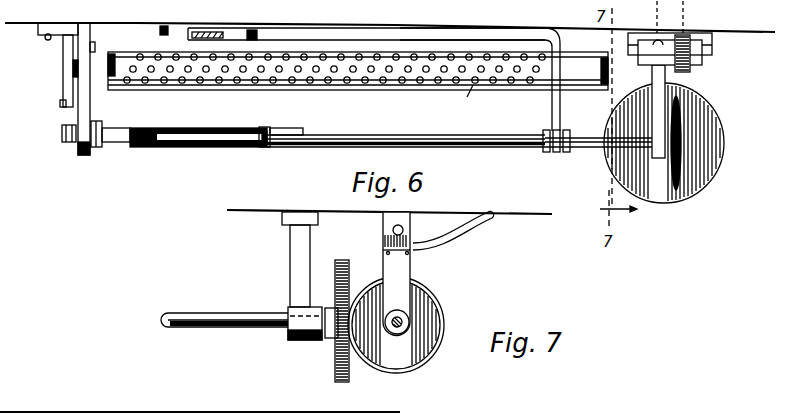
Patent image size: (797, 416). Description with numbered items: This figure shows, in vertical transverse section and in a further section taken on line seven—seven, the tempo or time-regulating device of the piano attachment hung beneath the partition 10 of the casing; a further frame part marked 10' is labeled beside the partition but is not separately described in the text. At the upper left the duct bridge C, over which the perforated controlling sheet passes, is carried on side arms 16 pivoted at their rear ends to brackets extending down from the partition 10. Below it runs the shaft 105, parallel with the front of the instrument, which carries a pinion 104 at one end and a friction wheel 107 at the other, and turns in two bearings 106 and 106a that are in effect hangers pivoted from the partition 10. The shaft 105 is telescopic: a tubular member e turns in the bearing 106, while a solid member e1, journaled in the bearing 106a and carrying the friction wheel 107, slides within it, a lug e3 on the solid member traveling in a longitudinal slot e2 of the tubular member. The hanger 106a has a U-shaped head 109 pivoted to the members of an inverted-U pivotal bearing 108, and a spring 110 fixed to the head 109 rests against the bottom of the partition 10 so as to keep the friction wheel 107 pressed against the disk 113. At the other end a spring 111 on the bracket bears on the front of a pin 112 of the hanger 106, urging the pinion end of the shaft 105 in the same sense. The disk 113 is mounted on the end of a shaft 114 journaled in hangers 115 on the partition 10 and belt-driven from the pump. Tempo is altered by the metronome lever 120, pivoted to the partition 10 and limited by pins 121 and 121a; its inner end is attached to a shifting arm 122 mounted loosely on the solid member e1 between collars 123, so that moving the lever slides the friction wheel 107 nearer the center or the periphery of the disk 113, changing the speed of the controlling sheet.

In FIG. 6, the partition 10 is at (390, 38).
In FIG. 7, the partition 10 is at (389, 301).
In FIG. 6, the frame pipe 10' is at (568, 79).
In FIG. 6, the side arms 16 is at (108, 69).
In FIG. 6, the duct bridge C is at (428, 58).
In FIG. 6, the pinion 104 is at (103, 126).
In FIG. 6, the shaft 105 is at (303, 133).
In FIG. 7, the shaft 105 is at (397, 333).
In FIG. 6, the bearing 106 is at (91, 97).
In FIG. 6, the bearing 106a is at (653, 79).
In FIG. 7, the bearing 106a is at (413, 270).
In FIG. 6, the friction wheel 107 is at (684, 157).
In FIG. 7, the friction wheel 107 is at (428, 303).
In FIG. 6, the pivotal bearing 108 is at (707, 50).
In FIG. 7, the pivotal bearing 108 is at (392, 222).
In FIG. 6, the U-shaped head 109 is at (694, 69).
In FIG. 7, the U-shaped head 109 is at (383, 243).
In FIG. 6, the spring 110 is at (684, 78).
In FIG. 7, the spring 110 is at (492, 214).
In FIG. 6, the spring 111 is at (68, 64).
In FIG. 6, the pin 112 is at (61, 105).
In FIG. 6, the disk 113 is at (680, 203).
In FIG. 7, the disk 113 is at (333, 382).
In FIG. 7, the shaft 114 is at (238, 313).
In FIG. 7, the hangers 115 is at (295, 263).
In FIG. 6, the metronome lever 120 is at (188, 38).
In FIG. 6, the pin 121 is at (160, 28).
In FIG. 6, the pin 121a is at (258, 37).
In FIG. 6, the shifting arm 122 is at (472, 38).
In FIG. 6, the collars 123 is at (567, 153).
In FIG. 6, the tubular member e is at (247, 146).
In FIG. 6, the solid member e1 is at (528, 143).
In FIG. 6, the longitudinal slot e2 is at (249, 128).
In FIG. 6, the lug e3 is at (283, 128).